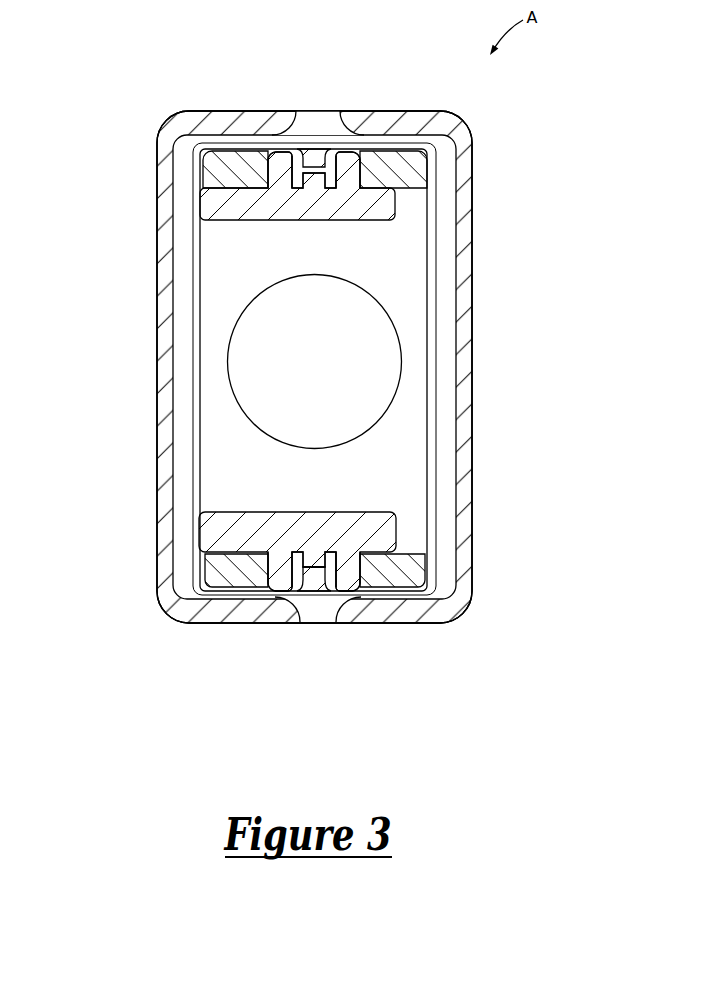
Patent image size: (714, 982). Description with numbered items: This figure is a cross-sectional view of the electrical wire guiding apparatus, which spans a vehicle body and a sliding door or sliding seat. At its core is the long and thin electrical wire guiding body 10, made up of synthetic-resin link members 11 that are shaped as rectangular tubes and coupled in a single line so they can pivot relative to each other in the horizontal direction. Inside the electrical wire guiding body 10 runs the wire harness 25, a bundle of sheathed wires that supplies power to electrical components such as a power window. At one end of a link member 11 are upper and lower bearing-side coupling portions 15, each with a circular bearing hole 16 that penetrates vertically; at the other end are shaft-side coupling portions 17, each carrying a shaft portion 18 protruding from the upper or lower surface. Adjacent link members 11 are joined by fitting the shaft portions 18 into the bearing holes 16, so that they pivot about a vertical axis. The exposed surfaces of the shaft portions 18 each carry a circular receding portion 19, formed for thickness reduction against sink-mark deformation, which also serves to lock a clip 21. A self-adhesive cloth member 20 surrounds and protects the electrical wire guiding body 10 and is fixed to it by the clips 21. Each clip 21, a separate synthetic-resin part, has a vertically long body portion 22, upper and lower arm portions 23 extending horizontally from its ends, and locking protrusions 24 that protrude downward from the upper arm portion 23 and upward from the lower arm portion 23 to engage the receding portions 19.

The electrical wire guiding body 10 is at (178, 160).
The link member 11 is at (452, 202).
The bearing-side coupling portion 15 is at (228, 167).
The bearing hole 16 is at (352, 158).
The shaft-side coupling portion 17 is at (375, 203).
The shaft portion 18 is at (278, 158).
The receding portion 19 is at (292, 177).
The self-adhesive cloth member 20 is at (436, 332).
The clip 21 is at (452, 123).
The body portion 22 is at (163, 352).
The arm portion 23 is at (248, 114).
The locking protrusion 24 is at (327, 152).
The wire harness 25 is at (243, 309).